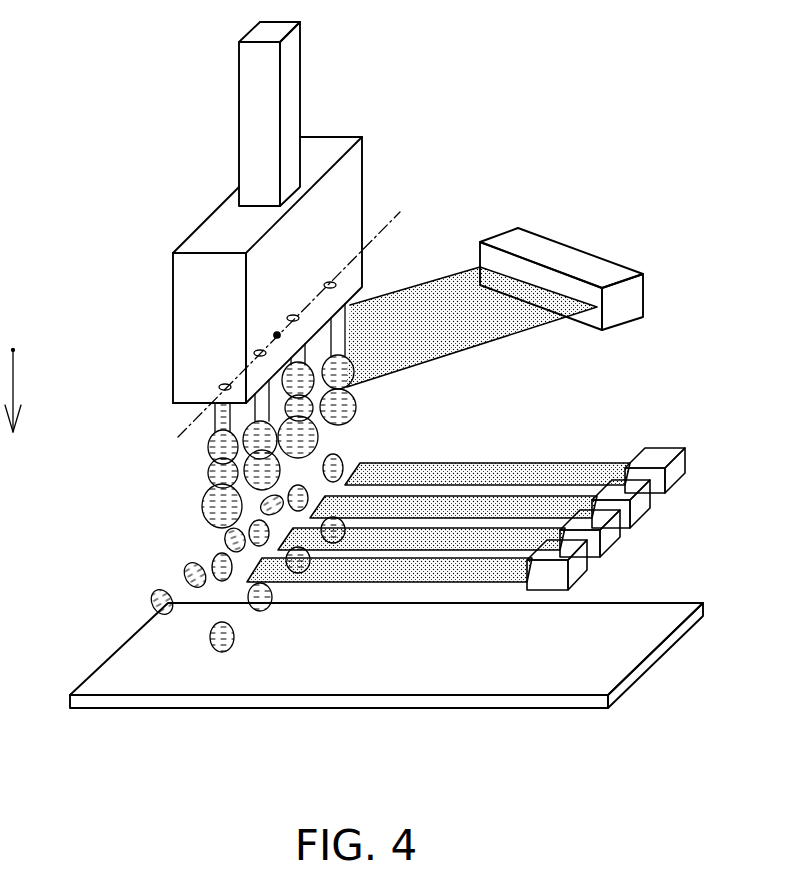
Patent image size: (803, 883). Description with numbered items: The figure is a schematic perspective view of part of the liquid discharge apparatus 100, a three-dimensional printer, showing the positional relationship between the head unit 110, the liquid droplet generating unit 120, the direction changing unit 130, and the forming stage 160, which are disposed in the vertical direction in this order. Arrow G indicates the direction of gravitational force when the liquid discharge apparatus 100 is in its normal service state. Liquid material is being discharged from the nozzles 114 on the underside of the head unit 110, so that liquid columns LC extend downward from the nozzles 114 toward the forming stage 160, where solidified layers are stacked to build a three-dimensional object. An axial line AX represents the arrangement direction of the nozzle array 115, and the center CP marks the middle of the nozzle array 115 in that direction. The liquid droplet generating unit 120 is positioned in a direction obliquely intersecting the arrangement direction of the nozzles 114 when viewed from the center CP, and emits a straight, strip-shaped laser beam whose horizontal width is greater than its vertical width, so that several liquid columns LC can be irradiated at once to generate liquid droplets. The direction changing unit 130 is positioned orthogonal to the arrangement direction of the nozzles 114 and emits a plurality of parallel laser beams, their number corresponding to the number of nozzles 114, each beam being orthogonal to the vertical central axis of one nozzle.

The liquid discharge apparatus 100 is at (86, 83).
The head unit 110 is at (192, 230).
The nozzles 114 is at (216, 389).
The nozzle array 115 is at (180, 411).
The liquid droplet generating unit 120 is at (595, 262).
The direction changing unit 130 is at (553, 543).
The forming stage 160 is at (667, 620).
The center of the nozzle array CP is at (277, 335).
The axial line AX is at (271, 338).
The liquid columns LC is at (208, 472).
The arrow G is at (13, 378).